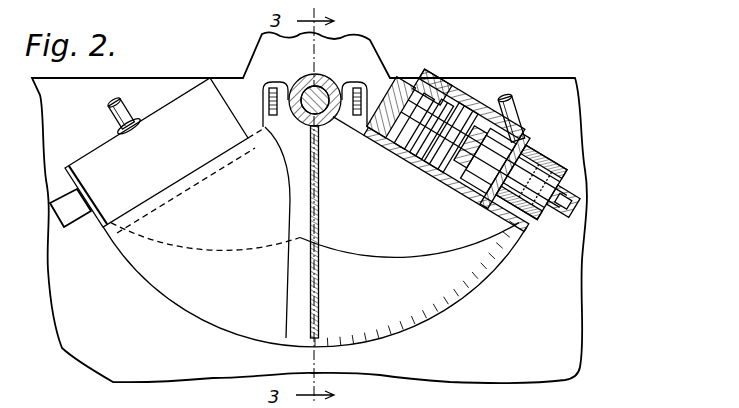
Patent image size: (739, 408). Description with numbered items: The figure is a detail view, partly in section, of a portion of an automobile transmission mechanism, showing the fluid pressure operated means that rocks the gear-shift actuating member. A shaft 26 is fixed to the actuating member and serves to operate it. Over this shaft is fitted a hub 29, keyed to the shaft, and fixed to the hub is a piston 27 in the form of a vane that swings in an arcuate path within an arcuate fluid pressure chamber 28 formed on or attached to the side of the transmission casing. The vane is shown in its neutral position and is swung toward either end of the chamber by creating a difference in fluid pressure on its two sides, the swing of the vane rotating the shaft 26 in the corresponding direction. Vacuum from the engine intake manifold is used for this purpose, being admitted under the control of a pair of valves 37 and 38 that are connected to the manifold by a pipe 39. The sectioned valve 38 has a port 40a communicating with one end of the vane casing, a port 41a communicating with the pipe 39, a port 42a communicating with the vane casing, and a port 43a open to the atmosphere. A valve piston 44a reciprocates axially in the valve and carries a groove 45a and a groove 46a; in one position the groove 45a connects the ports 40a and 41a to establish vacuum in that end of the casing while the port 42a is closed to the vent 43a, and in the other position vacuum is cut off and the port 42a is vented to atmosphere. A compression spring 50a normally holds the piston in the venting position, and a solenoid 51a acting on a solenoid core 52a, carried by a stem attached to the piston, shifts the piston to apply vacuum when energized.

The shaft 26 is at (323, 126).
The piston 27 is at (320, 253).
The arcuate fluid pressure chamber 28 is at (412, 327).
The hub 29 is at (321, 98).
The valve 37 is at (149, 152).
The valve 38 is at (452, 110).
The pipe 39 is at (112, 114).
The port 40a is at (425, 172).
The port 41a is at (460, 193).
The port 42a is at (405, 160).
The port 43a is at (390, 142).
The valve piston 44a is at (412, 122).
The groove 45a is at (443, 183).
The groove 46a is at (437, 97).
The compression spring 50a is at (545, 217).
The solenoid 51a is at (523, 147).
The solenoid core 52a is at (487, 203).